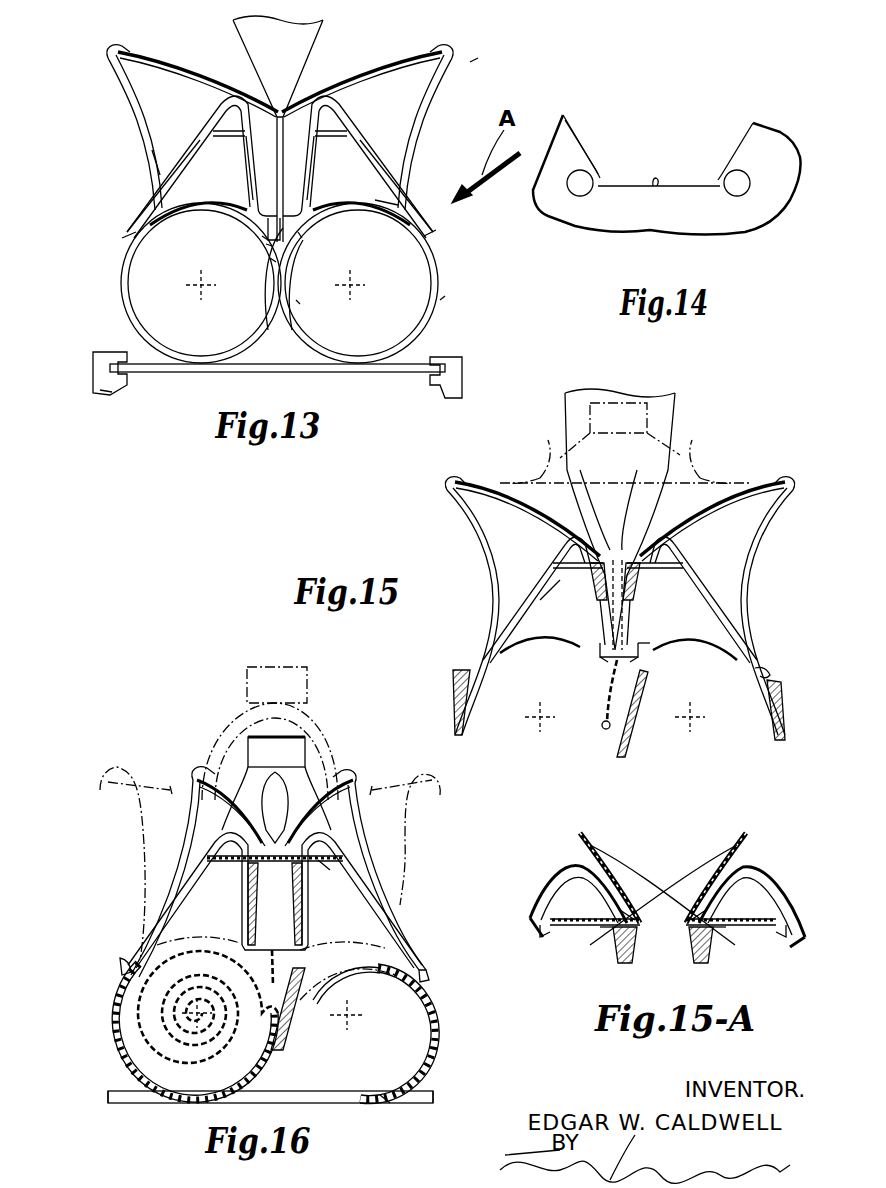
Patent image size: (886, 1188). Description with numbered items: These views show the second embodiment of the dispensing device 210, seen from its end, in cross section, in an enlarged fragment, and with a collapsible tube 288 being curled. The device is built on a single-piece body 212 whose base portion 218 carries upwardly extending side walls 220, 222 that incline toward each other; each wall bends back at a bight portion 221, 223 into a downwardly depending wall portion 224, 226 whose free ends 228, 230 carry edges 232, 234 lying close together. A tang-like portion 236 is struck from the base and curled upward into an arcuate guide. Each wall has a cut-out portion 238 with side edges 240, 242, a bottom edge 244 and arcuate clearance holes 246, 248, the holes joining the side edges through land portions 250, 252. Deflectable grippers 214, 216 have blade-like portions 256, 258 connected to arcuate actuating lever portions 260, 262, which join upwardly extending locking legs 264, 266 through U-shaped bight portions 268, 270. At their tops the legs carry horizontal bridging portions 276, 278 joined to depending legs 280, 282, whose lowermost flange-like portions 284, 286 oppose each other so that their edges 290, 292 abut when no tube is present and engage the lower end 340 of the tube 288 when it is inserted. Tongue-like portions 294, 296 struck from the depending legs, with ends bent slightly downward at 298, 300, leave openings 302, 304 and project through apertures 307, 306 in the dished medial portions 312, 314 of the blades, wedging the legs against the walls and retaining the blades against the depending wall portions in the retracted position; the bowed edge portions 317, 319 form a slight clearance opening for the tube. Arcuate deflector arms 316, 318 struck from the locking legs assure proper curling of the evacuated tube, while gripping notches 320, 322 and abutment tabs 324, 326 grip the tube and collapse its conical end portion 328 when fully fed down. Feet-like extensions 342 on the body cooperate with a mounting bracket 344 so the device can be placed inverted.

In FIG. 13, the dispensing device 210 is at (473, 62).
In FIG. 13, the body 212 is at (444, 296).
In FIG. 14, the body 212 is at (800, 152).
In FIG. 16, the body 212 is at (384, 1108).
In FIG. 13, the deflectable gripper 214 is at (104, 79).
In FIG. 15, the deflectable gripper 214 is at (460, 527).
In FIG. 16, the deflectable gripper 214 is at (175, 812).
In FIG. 13, the deflectable gripper 216 is at (424, 109).
In FIG. 15, the deflectable gripper 216 is at (778, 530).
In FIG. 16, the deflectable gripper 216 is at (380, 830).
In FIG. 13, the base portion 218 is at (330, 373).
In FIG. 16, the base portion 218 is at (338, 1104).
In FIG. 13, the side wall 220 is at (165, 170).
In FIG. 15, the side wall 220 is at (520, 585).
In FIG. 15-A, the side wall 220 is at (548, 878).
In FIG. 16, the side wall 220 is at (185, 858).
In FIG. 13, the bight portion 221 is at (228, 104).
In FIG. 13, the side wall 222 is at (440, 268).
In FIG. 14, the side wall 222 is at (790, 212).
In FIG. 15, the side wall 222 is at (735, 583).
In FIG. 15-A, the side wall 222 is at (780, 878).
In FIG. 16, the side wall 222 is at (368, 875).
In FIG. 13, the bight portion 223 is at (332, 106).
In FIG. 13, the depending wall portion 224 is at (256, 205).
In FIG. 15, the depending wall portion 224 is at (590, 638).
In FIG. 15-A, the depending wall portion 224 is at (612, 955).
In FIG. 13, the depending wall portion 226 is at (304, 205).
In FIG. 15, the depending wall portion 226 is at (648, 640).
In FIG. 15-A, the depending wall portion 226 is at (715, 955).
In FIG. 13, the free end 228 is at (250, 222).
In FIG. 15, the free end 228 is at (605, 660).
In FIG. 13, the free end 230 is at (305, 222).
In FIG. 15, the free end 230 is at (633, 660).
In FIG. 13, the edge 232 is at (262, 238).
In FIG. 13, the edge 234 is at (300, 235).
In FIG. 13, the tang-like portion 236 is at (296, 310).
In FIG. 15, the tang-like portion 236 is at (635, 735).
In FIG. 16, the tang-like portion 236 is at (300, 1030).
In FIG. 14, the cut-out portion 238 is at (578, 118).
In FIG. 15, the cut-out portion 238 is at (508, 615).
In FIG. 14, the side edge 240 is at (590, 140).
In FIG. 14, the side edge 242 is at (738, 152).
In FIG. 14, the bottom edge 244 is at (654, 190).
In FIG. 16, the bottom edge 244 is at (428, 970).
In FIG. 14, the clearance hole 246 is at (582, 196).
In FIG. 14, the clearance hole 248 is at (740, 196).
In FIG. 14, the land portion 250 is at (600, 172).
In FIG. 14, the land portion 252 is at (720, 178).
In FIG. 15, the land portion 252 is at (772, 672).
In FIG. 13, the blade-like portion 256 is at (160, 54).
In FIG. 15, the blade-like portion 256 is at (478, 486).
In FIG. 15-A, the blade-like portion 256 is at (585, 835).
In FIG. 13, the blade-like portion 258 is at (390, 52).
In FIG. 15, the blade-like portion 258 is at (758, 482).
In FIG. 15-A, the blade-like portion 258 is at (742, 835).
In FIG. 13, the actuating lever portion 260 is at (128, 100).
In FIG. 15, the actuating lever portion 260 is at (478, 548).
In FIG. 16, the actuating lever portion 260 is at (182, 877).
In FIG. 13, the actuating lever portion 262 is at (404, 165).
In FIG. 15, the actuating lever portion 262 is at (752, 555).
In FIG. 16, the actuating lever portion 262 is at (382, 900).
In FIG. 13, the locking leg 264 is at (158, 168).
In FIG. 13, the locking leg 266 is at (398, 203).
In FIG. 13, the bight portion 268 is at (135, 246).
In FIG. 15, the bight portion 268 is at (470, 690).
In FIG. 13, the bight portion 270 is at (432, 243).
In FIG. 15, the bight portion 270 is at (768, 690).
In FIG. 13, the bridging portion 276 is at (212, 128).
In FIG. 15-A, the bridging portion 276 is at (605, 926).
In FIG. 16, the bridging portion 276 is at (215, 843).
In FIG. 13, the bridging portion 278 is at (335, 120).
In FIG. 15-A, the bridging portion 278 is at (720, 926).
In FIG. 16, the bridging portion 278 is at (340, 855).
In FIG. 13, the depending leg 280 is at (249, 178).
In FIG. 15, the depending leg 280 is at (592, 620).
In FIG. 13, the depending leg 282 is at (311, 178).
In FIG. 15, the depending leg 282 is at (645, 618).
In FIG. 13, the flange-like portion 284 is at (268, 245).
In FIG. 13, the flange-like portion 286 is at (298, 302).
In FIG. 13, the collapsible tube 288 is at (312, 62).
In FIG. 15, the collapsible tube 288 is at (680, 420).
In FIG. 16, the collapsible tube 288 is at (276, 790).
In FIG. 15, the edge 290 is at (605, 685).
In FIG. 15, the edge 292 is at (640, 680).
In FIG. 15, the tongue-like portion 294 is at (612, 560).
In FIG. 15-A, the tongue-like portion 294 is at (630, 910).
In FIG. 15, the tongue-like portion 296 is at (628, 560).
In FIG. 15-A, the tongue-like portion 296 is at (696, 910).
In FIG. 15-A, the bent end 298 is at (630, 925).
In FIG. 15-A, the bent end 300 is at (696, 925).
In FIG. 16, the opening 302 is at (243, 880).
In FIG. 16, the opening 304 is at (300, 880).
In FIG. 15-A, the aperture 306 is at (712, 916).
In FIG. 15-A, the aperture 307 is at (612, 916).
In FIG. 15-A, the medial portion 312 is at (628, 905).
In FIG. 15-A, the medial portion 314 is at (698, 905).
In FIG. 15, the deflector arm 316 is at (538, 648).
In FIG. 16, the deflector arm 316 is at (187, 962).
In FIG. 15, the bowed edge portion 317 is at (592, 596).
In FIG. 15, the deflector arm 318 is at (692, 648).
In FIG. 16, the deflector arm 318 is at (365, 985).
In FIG. 15, the bowed edge portion 319 is at (644, 598).
In FIG. 15, the gripping notch 320 is at (545, 472).
In FIG. 15, the gripping notch 322 is at (695, 470).
In FIG. 13, the abutment tab 324 is at (118, 44).
In FIG. 15, the abutment tab 324 is at (458, 476).
In FIG. 16, the abutment tab 324 is at (200, 766).
In FIG. 13, the abutment tab 326 is at (443, 44).
In FIG. 15, the abutment tab 326 is at (784, 476).
In FIG. 16, the abutment tab 326 is at (343, 775).
In FIG. 15, the conical end portion 328 is at (690, 450).
In FIG. 16, the conical end portion 328 is at (230, 740).
In FIG. 13, the lower end 340 is at (272, 260).
In FIG. 13, the feet-like extension 342 is at (95, 367).
In FIG. 16, the feet-like extension 342 is at (108, 1097).
In FIG. 13, the mounting bracket 344 is at (100, 390).
In FIG. 16, the mounting bracket 344 is at (122, 963).